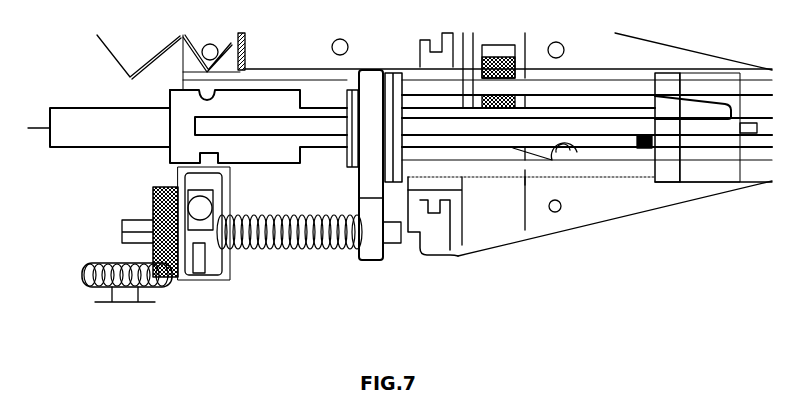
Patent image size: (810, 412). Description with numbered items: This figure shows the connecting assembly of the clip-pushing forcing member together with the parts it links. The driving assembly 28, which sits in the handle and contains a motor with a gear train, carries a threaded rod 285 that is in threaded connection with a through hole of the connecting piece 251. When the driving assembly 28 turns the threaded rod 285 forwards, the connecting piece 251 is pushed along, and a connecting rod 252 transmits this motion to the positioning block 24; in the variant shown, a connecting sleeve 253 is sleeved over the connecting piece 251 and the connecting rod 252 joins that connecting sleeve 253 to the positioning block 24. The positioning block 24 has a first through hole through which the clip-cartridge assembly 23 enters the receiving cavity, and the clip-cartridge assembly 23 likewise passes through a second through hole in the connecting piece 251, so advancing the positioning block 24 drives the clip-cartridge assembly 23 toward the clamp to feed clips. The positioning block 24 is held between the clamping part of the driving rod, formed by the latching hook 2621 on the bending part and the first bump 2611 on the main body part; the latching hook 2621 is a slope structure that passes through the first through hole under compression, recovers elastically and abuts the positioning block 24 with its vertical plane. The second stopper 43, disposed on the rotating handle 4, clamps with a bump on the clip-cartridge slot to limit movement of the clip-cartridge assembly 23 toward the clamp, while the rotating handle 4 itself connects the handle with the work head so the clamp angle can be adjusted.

The clip-cartridge assembly 23 is at (138, 118).
The driving assembly 28 is at (150, 236).
The threaded rod 285 is at (283, 250).
The connecting piece 251 is at (370, 250).
The second stopper 43 is at (410, 122).
The connecting rod 252 is at (547, 170).
The connecting sleeve 253 is at (388, 104).
The rotating handle 4 is at (596, 53).
The positioning block 24 is at (668, 82).
The first bump 2611 is at (642, 148).
The latching hook 2621 is at (698, 110).